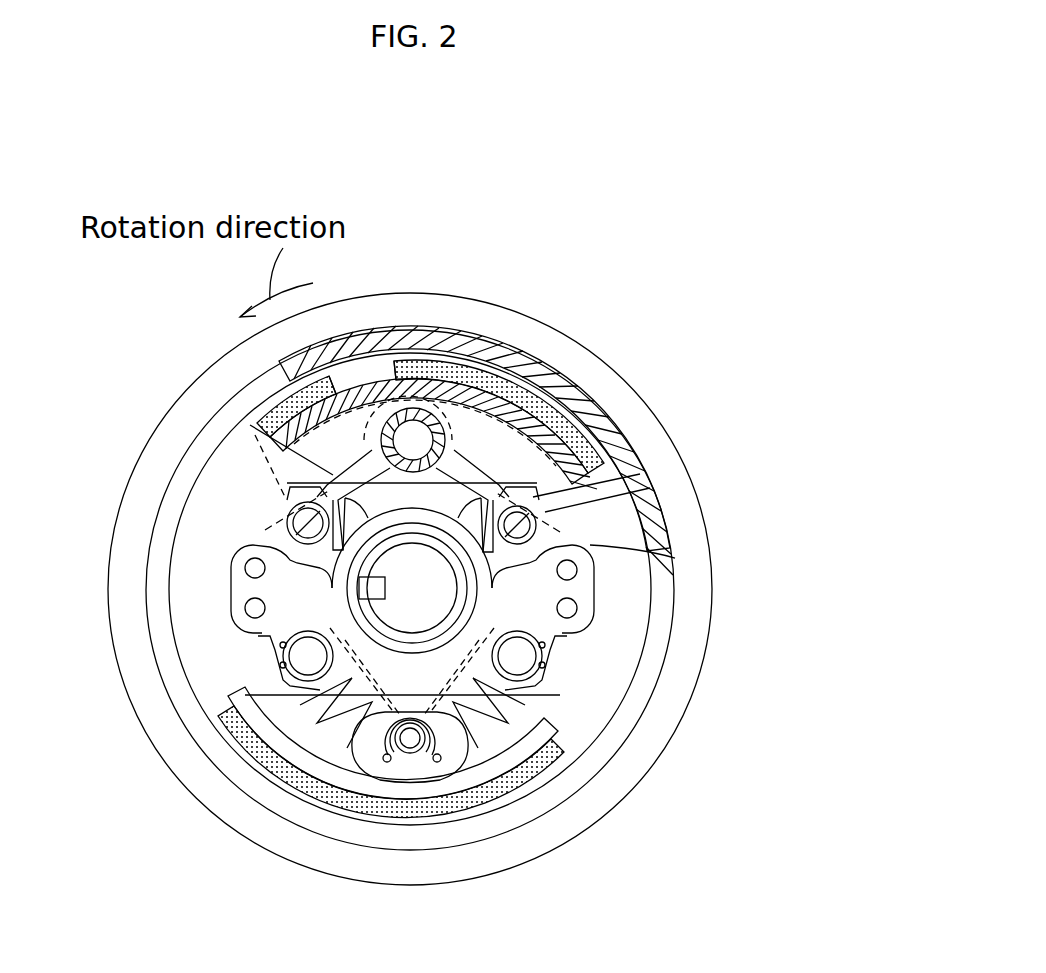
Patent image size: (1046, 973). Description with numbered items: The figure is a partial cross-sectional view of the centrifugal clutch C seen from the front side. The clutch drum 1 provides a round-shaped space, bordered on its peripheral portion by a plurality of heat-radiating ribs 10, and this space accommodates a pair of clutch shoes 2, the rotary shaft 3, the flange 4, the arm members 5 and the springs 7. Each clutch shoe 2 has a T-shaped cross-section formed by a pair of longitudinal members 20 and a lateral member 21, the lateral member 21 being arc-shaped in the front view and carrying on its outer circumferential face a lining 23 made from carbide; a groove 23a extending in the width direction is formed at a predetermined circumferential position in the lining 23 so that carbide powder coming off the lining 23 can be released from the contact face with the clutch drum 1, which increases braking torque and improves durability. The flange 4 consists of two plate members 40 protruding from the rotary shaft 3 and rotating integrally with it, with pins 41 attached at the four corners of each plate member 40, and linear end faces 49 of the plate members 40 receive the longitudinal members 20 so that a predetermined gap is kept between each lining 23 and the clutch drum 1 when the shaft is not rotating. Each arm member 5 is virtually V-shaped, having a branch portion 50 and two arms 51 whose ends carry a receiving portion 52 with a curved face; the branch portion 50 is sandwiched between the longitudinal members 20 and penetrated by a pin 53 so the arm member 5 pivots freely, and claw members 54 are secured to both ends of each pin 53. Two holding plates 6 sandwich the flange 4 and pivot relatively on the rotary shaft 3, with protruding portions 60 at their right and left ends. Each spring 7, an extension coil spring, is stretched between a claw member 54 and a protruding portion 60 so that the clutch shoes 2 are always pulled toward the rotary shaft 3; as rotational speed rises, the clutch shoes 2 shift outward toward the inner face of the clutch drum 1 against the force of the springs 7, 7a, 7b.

The clutch drum 1 is at (617, 418).
The clutch shoe 2 is at (560, 167).
The rotary shaft 3 is at (452, 763).
The flange 4 is at (192, 287).
The arm member 5 is at (553, 410).
The holding plate 6 is at (373, 657).
The spring 7 is at (448, 511).
The spring 7a is at (459, 511).
The spring 7b is at (610, 380).
The heat-radiating rib 10 is at (480, 343).
The longitudinal member 20 is at (525, 400).
The lateral member 21 is at (507, 360).
The lining 23 is at (520, 395).
The groove 23a is at (380, 392).
The plate member 40 is at (275, 500).
The pin 41 is at (273, 525).
The linear end face 49 is at (370, 470).
The branch portion 50 is at (425, 420).
The arm 51 is at (335, 385).
The receiving portion 52 is at (287, 513).
The pin 53 is at (418, 410).
The claw member 54 is at (408, 430).
The protruding portion 60 is at (235, 592).
The centrifugal clutch C is at (686, 264).